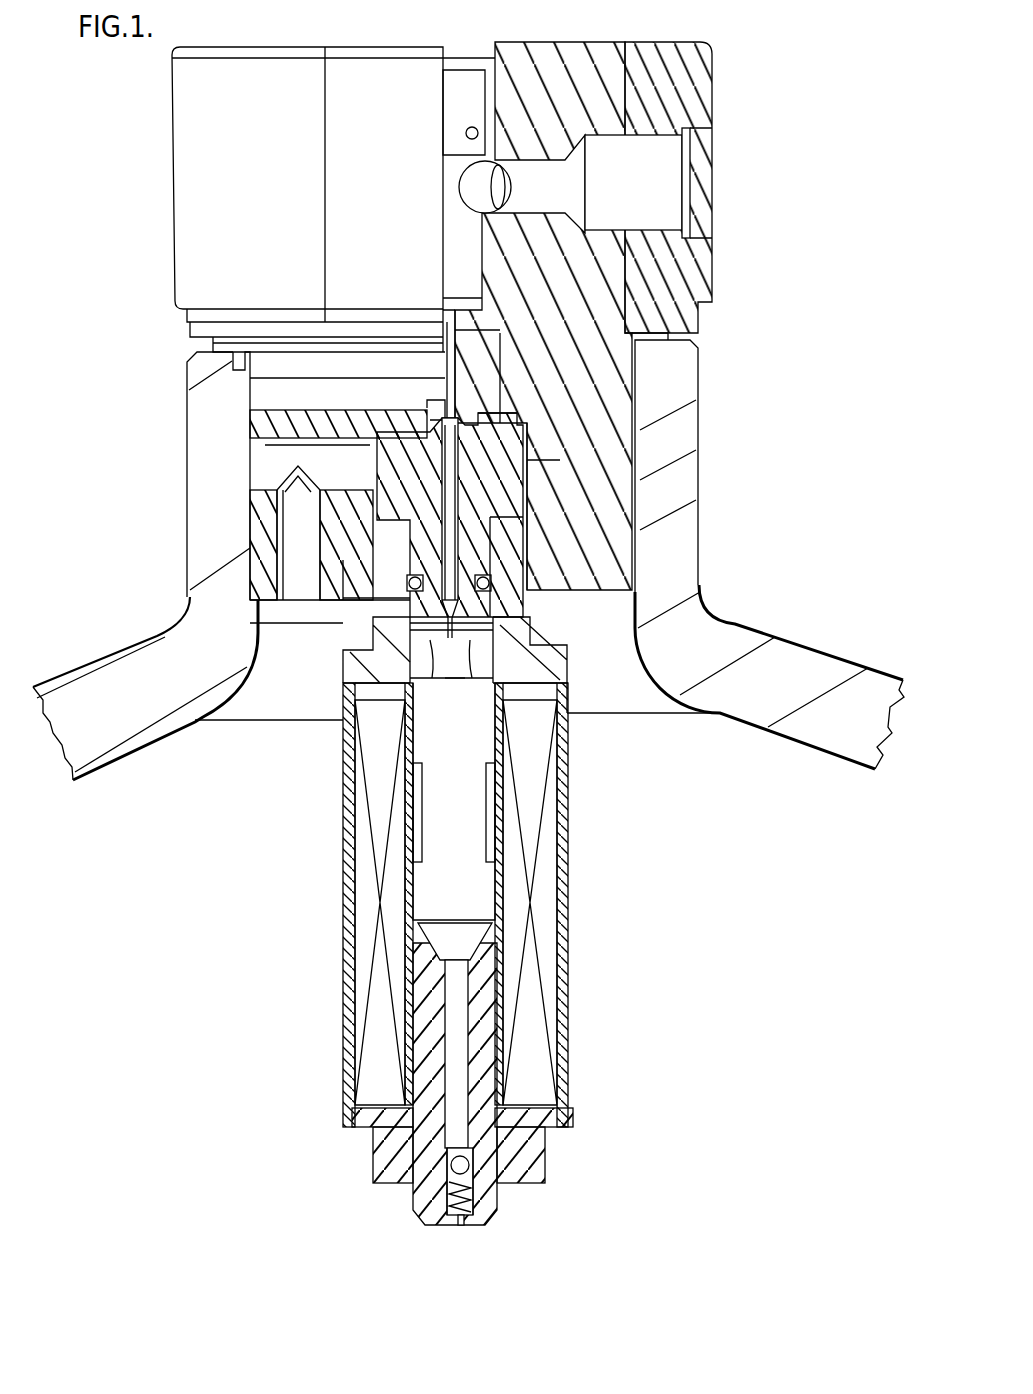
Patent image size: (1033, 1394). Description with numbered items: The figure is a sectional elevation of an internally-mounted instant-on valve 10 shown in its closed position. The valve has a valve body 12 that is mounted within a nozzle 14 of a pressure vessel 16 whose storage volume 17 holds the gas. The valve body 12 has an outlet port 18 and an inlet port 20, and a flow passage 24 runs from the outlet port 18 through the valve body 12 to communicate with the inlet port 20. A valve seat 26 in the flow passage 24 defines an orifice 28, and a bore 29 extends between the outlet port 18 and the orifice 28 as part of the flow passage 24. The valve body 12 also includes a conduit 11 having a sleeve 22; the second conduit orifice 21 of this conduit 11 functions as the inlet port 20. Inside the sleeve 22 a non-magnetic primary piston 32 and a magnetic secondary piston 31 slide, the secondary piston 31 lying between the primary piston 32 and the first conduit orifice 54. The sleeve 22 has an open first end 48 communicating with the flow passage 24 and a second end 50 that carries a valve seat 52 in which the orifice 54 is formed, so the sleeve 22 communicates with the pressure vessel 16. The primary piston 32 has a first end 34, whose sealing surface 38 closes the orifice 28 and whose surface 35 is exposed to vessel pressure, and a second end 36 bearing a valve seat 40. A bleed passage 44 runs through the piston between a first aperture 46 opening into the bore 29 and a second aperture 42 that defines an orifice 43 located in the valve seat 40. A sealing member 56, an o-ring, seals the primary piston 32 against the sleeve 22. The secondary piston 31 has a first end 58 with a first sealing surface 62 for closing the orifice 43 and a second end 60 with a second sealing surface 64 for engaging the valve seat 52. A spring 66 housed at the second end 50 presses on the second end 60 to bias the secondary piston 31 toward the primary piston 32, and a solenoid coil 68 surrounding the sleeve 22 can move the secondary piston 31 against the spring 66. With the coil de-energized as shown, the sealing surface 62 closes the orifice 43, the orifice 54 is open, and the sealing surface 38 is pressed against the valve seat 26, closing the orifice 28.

The instant-on valve 10 is at (362, 78).
The conduit 11 is at (572, 672).
The valve body 12 is at (620, 295).
The nozzle 14 is at (686, 463).
The pressure vessel 16 is at (808, 638).
The storage volume 17 is at (742, 822).
The outlet port 18 is at (702, 180).
The inlet port 20 is at (277, 478).
The second conduit orifice 21 is at (311, 544).
The sleeve 22 is at (342, 670).
The flow passage 24 is at (468, 276).
The valve seat 26 is at (392, 430).
The orifice 28 is at (462, 385).
The bore 29 is at (608, 380).
The secondary piston 31 is at (473, 863).
The primary piston 32 is at (510, 497).
The first end 34 is at (527, 453).
The surface 35 is at (380, 449).
The second end 36 is at (362, 640).
The sealing surface 38 is at (520, 425).
The valve seat 40 is at (560, 652).
The second aperture 42 is at (470, 625).
The orifice 43 is at (452, 630).
The bleed passage 44 is at (452, 532).
The first aperture 46 is at (447, 418).
The first end 48 is at (342, 592).
The second end 50 is at (428, 1227).
The valve seat 52 is at (497, 1207).
The first conduit orifice 54 is at (465, 1232).
The sealing member 56 is at (525, 614).
The first end 58 is at (456, 713).
The second end 60 is at (522, 1172).
The first sealing surface 62 is at (455, 625).
The second sealing surface 64 is at (448, 1197).
The spring 66 is at (487, 1190).
The solenoid coil 68 is at (533, 950).